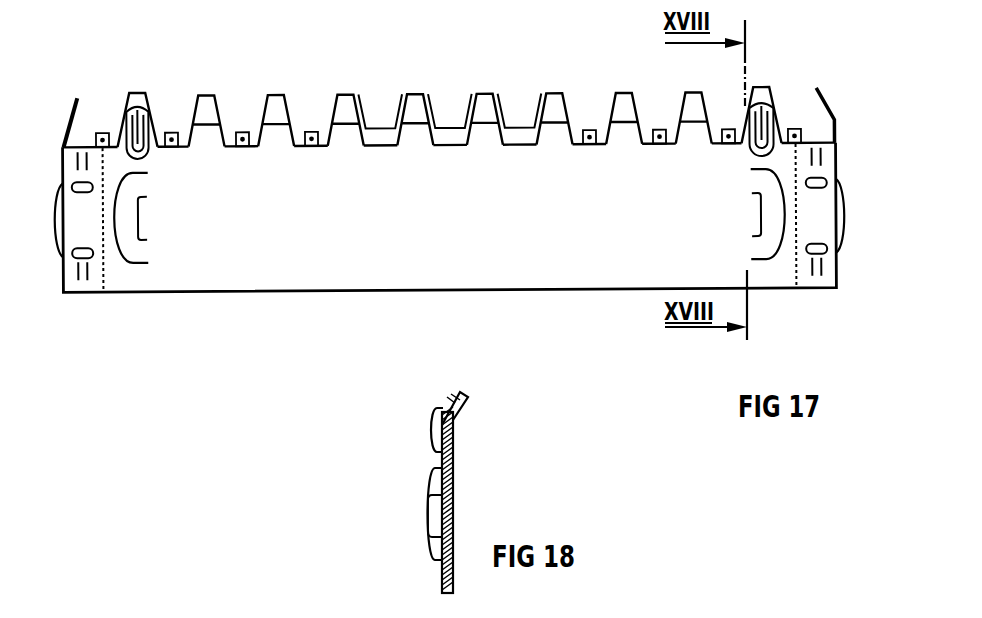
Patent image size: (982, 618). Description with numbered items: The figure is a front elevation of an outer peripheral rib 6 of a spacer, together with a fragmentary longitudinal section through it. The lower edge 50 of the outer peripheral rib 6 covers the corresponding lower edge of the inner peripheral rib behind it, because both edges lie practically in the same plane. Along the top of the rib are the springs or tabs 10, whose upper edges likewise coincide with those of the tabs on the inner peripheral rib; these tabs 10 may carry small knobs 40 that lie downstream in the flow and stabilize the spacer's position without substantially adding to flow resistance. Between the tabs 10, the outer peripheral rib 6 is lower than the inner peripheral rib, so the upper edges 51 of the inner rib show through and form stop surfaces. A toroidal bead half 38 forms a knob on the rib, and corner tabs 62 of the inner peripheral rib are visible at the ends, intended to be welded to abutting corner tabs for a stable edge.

The outer peripheral rib 6 is at (543, 255).
The tabs 10 is at (627, 103).
The toroidal bead half 38 is at (773, 240).
The small knobs 40 is at (780, 123).
The lower edges 50 is at (448, 292).
The upper edges 51 is at (457, 128).
The corner tab 62 is at (540, 107).